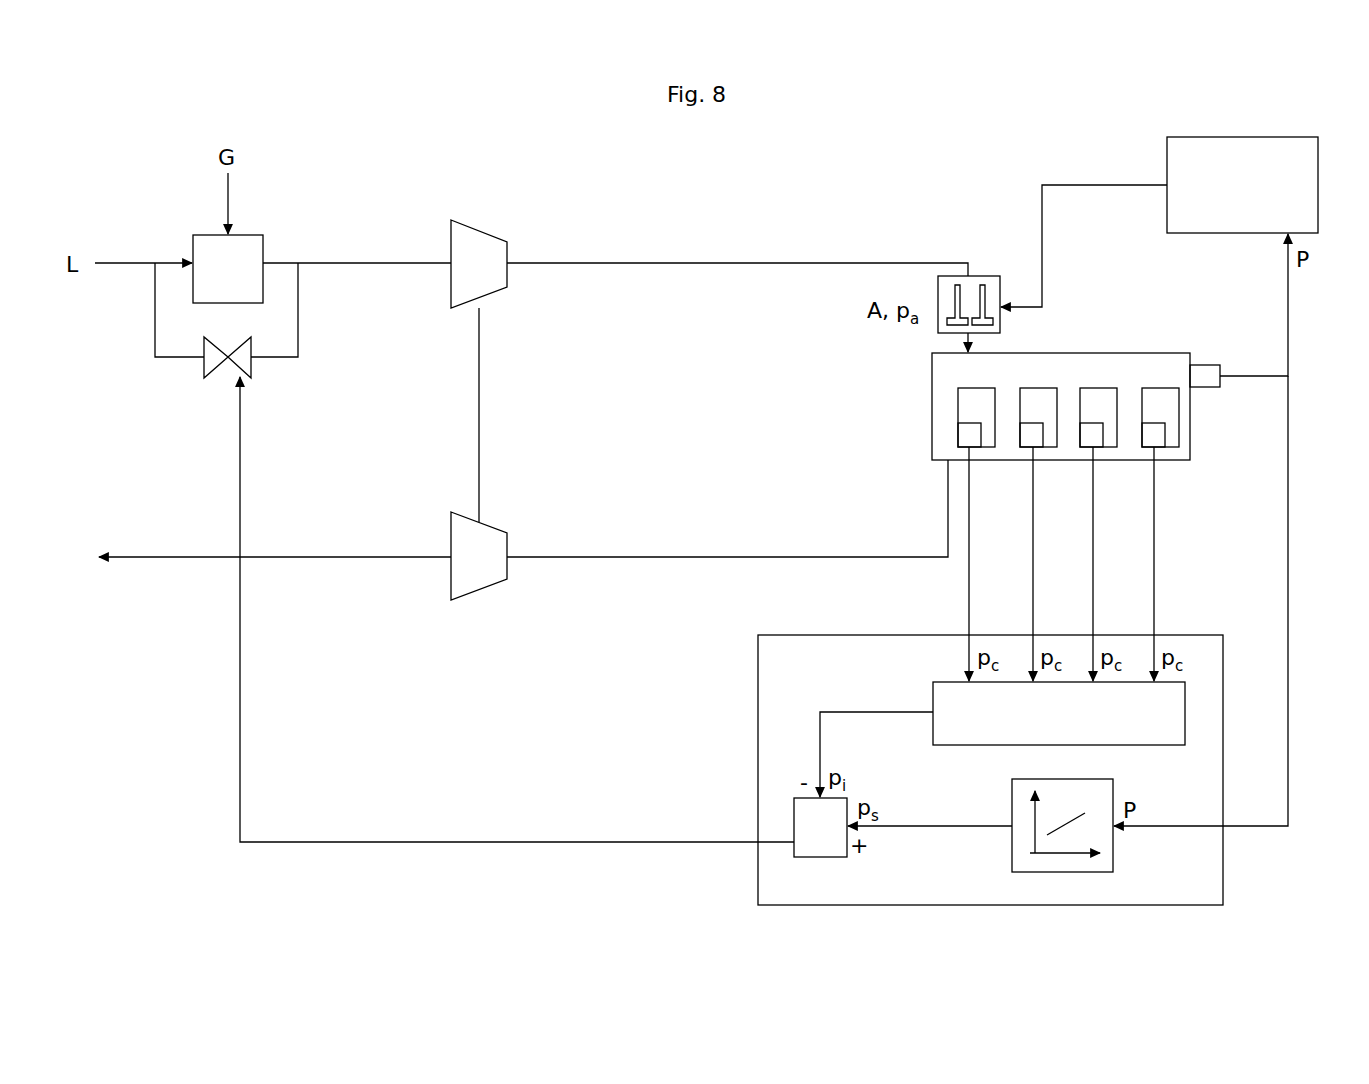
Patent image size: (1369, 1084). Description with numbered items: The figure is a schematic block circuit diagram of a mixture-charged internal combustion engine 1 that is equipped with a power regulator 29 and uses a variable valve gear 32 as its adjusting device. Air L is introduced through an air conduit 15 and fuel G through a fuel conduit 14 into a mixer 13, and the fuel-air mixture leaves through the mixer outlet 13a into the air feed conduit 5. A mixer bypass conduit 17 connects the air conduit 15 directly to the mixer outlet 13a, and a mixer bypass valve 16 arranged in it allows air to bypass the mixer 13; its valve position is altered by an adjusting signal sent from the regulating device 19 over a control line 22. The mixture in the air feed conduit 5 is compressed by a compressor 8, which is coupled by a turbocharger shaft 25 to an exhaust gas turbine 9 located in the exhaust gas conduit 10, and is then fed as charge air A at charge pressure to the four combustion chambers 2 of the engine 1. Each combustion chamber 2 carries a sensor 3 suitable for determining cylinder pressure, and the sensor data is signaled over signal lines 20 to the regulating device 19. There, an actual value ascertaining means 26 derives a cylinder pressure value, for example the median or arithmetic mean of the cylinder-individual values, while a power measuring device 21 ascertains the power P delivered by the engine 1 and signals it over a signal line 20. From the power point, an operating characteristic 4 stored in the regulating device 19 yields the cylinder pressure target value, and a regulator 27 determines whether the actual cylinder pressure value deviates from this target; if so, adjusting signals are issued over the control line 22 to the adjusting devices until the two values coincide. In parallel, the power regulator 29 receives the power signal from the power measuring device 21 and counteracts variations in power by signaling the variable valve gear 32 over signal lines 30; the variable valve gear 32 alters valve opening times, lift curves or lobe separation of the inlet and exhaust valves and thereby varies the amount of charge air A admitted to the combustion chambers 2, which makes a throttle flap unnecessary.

The internal combustion engine 1 is at (1133, 344).
The combustion chambers 2 is at (1158, 402).
The sensor 3 is at (970, 435).
The operating characteristic 4 is at (1013, 847).
The air feed conduit 5 is at (400, 263).
The compressor 8 is at (479, 264).
The exhaust gas turbine 9 is at (479, 556).
The exhaust gas conduit 10 is at (398, 557).
The mixer 13 is at (228, 269).
The mixer outlet 13a is at (275, 263).
The fuel conduit 14 is at (227, 192).
The air conduit 15 is at (123, 263).
The mixer bypass valve 16 is at (213, 393).
The mixer bypass conduit 17 is at (155, 330).
The regulating device 19 is at (758, 687).
The signal lines 20 is at (1289, 297).
The power measuring device 21 is at (1205, 375).
The control line 22 is at (510, 843).
The turbocharger shaft 25 is at (477, 402).
The actual value ascertaining means 26 is at (1059, 713).
The regulator 27 is at (820, 827).
The power regulator 29 is at (1242, 185).
The signal lines 30 is at (1078, 182).
The variable valve gear 32 is at (985, 276).